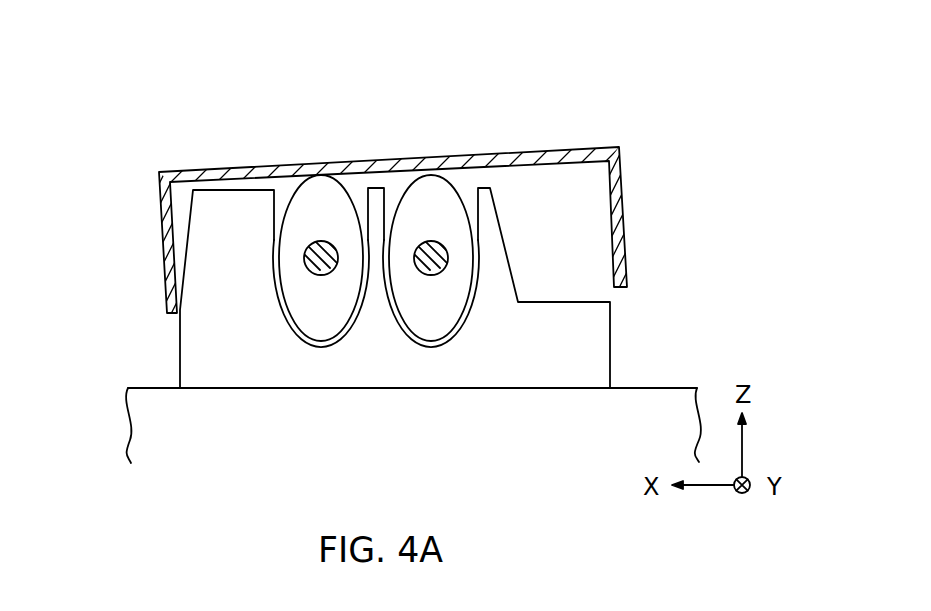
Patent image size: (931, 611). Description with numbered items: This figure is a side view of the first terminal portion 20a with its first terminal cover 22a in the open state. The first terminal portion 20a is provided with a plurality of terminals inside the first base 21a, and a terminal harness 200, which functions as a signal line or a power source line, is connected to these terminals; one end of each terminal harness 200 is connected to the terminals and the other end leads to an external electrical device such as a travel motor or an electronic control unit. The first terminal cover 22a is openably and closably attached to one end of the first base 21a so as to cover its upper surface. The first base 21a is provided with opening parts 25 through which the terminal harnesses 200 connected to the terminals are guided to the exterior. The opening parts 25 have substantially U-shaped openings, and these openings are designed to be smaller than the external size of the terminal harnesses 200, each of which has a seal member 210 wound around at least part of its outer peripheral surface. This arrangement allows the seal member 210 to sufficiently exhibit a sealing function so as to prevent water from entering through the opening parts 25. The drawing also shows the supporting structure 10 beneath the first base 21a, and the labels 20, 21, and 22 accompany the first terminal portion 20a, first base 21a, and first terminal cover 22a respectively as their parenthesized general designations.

The base / housing 10 is at (667, 388).
The first terminal portion 20a is at (400, 251).
The hinge member 20 is at (212, 107).
The first base 21a is at (324, 330).
The body portion 21 is at (324, 330).
The first terminal cover 22a is at (421, 235).
The plate portion 22 is at (550, 150).
The opening parts 25 is at (407, 338).
The terminal harness 200 is at (322, 242).
The seal member 210 is at (342, 180).